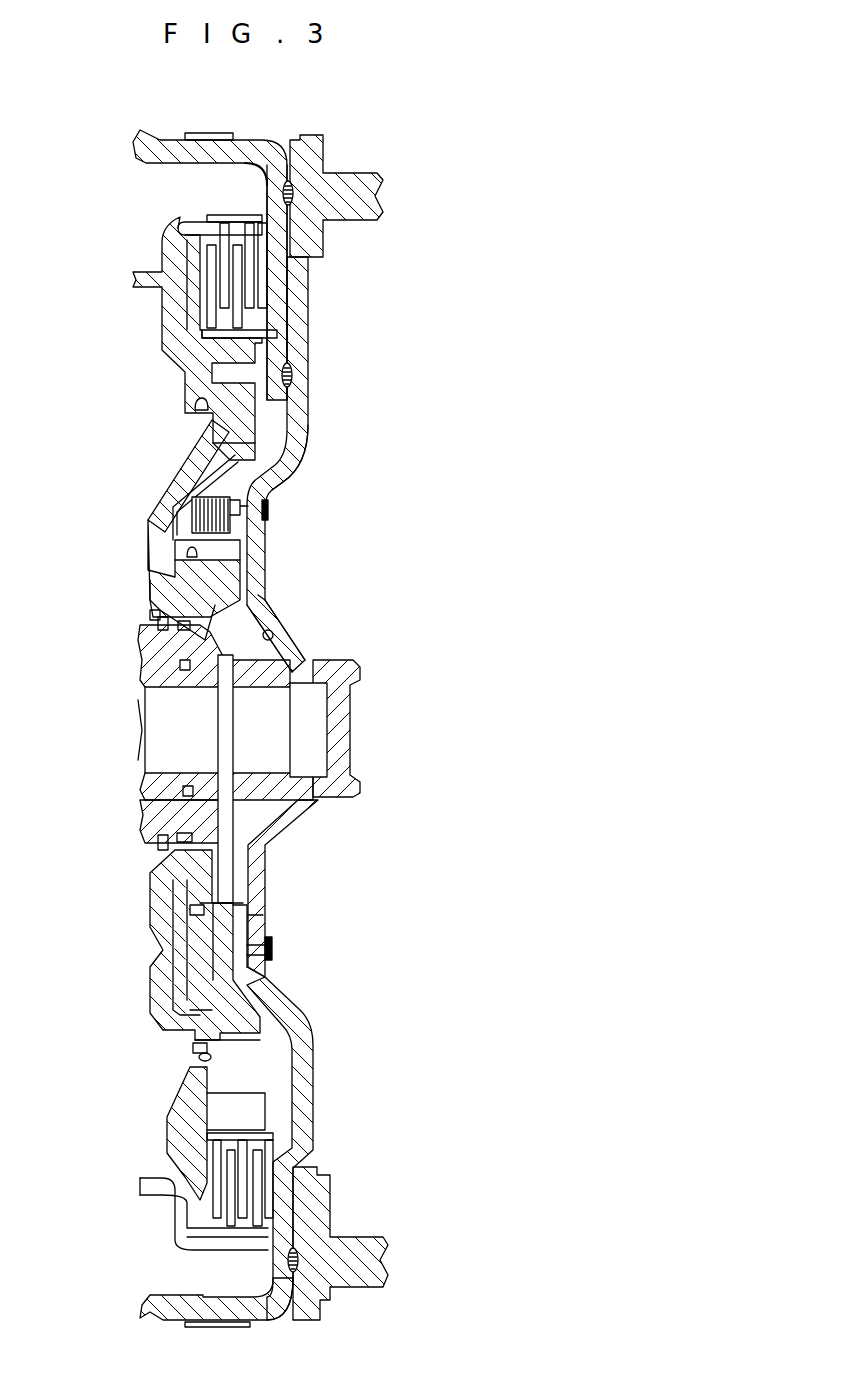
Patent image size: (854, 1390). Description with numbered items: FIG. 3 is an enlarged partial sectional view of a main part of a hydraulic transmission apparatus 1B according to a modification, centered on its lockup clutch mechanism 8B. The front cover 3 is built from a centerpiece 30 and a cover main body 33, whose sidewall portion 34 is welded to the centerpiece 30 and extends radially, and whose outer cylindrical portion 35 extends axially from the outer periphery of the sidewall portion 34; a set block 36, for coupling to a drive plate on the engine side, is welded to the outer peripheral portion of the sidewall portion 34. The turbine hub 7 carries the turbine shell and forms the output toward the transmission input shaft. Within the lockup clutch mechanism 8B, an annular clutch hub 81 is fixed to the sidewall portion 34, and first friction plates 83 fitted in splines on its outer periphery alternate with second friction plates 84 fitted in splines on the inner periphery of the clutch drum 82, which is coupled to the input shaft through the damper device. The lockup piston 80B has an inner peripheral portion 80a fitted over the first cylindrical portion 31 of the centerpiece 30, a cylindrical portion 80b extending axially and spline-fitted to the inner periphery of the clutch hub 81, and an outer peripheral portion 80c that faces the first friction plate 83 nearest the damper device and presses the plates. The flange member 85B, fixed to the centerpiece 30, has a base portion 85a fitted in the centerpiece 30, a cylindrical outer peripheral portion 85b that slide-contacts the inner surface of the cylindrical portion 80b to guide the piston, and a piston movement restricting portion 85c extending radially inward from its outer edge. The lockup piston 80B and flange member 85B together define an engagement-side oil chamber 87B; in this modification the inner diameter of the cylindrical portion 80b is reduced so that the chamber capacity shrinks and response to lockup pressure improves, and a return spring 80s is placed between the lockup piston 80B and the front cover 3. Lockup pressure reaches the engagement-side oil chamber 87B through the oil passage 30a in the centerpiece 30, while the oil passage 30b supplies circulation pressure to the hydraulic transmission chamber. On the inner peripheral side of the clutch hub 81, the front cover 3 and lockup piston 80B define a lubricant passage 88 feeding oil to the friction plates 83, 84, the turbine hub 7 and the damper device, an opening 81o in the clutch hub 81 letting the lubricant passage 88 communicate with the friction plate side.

The hydraulic transmission apparatus 1B is at (318, 1045).
The front cover 3 is at (272, 520).
The turbine hub 7 is at (232, 800).
The lockup clutch mechanism 8B is at (240, 210).
The centerpiece 30 is at (343, 665).
The oil passage 30a is at (279, 663).
The oil passage 30b is at (232, 870).
The first cylindrical portion 31 is at (255, 920).
The cover main body 33 is at (312, 372).
The sidewall portion 34 is at (300, 442).
The outer cylindrical portion 35 is at (243, 148).
The set block 36 is at (353, 182).
The lockup piston 80B is at (162, 337).
The inner peripheral portion 80a is at (180, 905).
The cylindrical portion 80b is at (185, 1072).
The outer peripheral portion 80c is at (185, 1180).
The return spring 80s is at (262, 548).
The clutch hub 81 is at (295, 334).
The opening 81o is at (303, 1172).
The clutch drum 82 is at (197, 217).
The first friction plates 83 is at (235, 296).
The second friction plates 84 is at (262, 242).
The flange member 85B is at (160, 457).
The base portion 85a is at (155, 848).
The cylindrical outer peripheral portion 85b is at (190, 1043).
The piston movement restricting portion 85c is at (190, 1012).
The engagement-side oil chamber 87B is at (245, 883).
The lubricant passage 88 is at (234, 977).